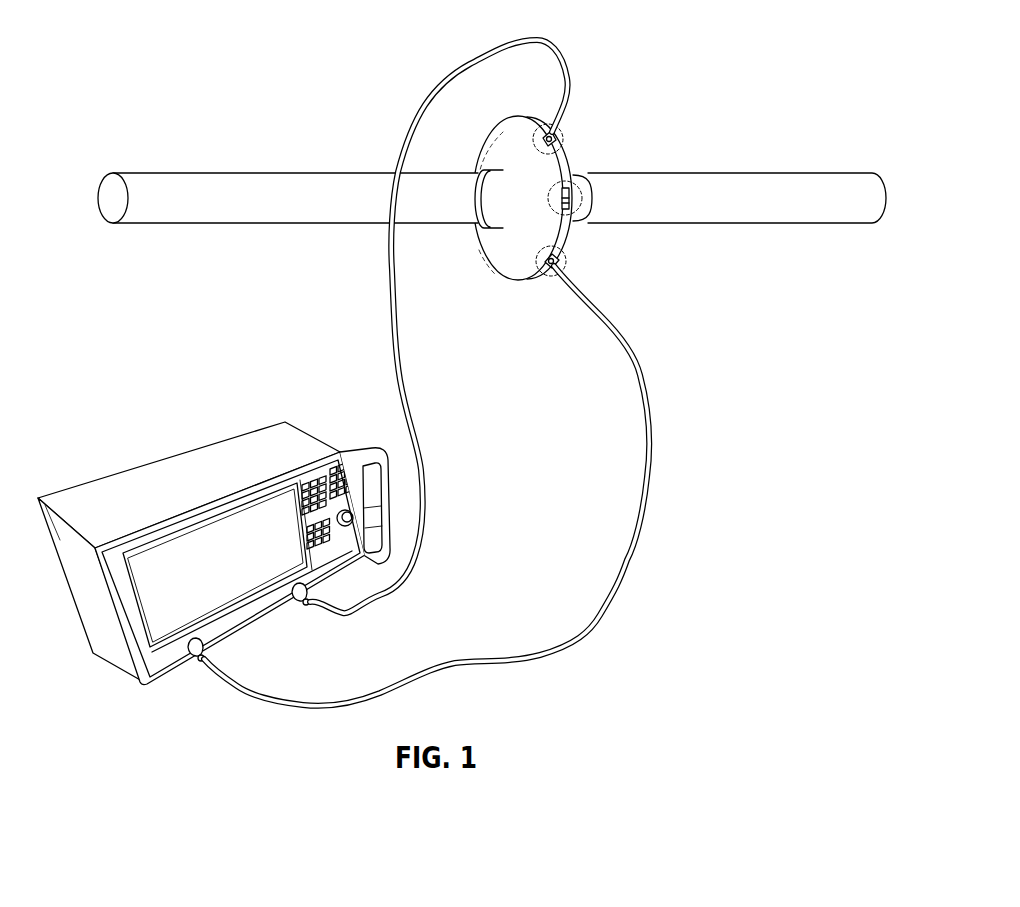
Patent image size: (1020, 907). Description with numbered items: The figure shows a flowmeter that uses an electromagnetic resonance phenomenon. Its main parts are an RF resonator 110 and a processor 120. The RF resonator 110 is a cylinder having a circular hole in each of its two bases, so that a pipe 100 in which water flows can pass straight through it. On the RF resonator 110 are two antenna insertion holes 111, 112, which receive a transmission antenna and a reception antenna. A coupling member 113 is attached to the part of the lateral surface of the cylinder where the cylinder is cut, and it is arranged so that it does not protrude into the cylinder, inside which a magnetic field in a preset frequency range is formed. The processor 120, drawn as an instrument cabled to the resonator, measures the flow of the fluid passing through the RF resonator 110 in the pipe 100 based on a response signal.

The pipe 100 is at (216, 183).
The RF resonator 110 is at (498, 252).
The antenna insertion hole 111 is at (565, 133).
The antenna insertion hole 112 is at (547, 276).
The coupling member 113 is at (587, 205).
The processor 120 is at (175, 470).